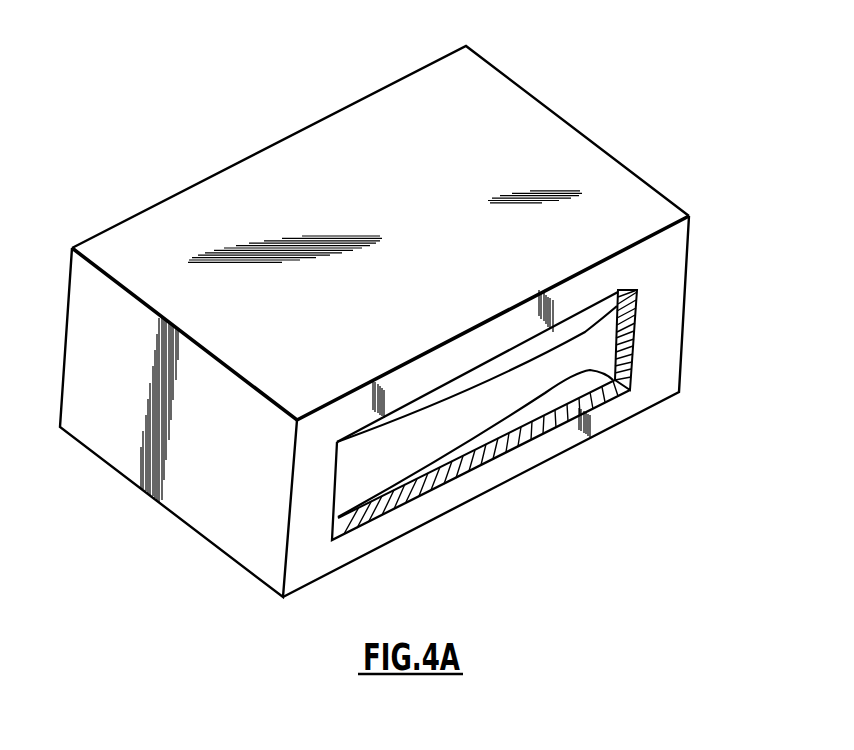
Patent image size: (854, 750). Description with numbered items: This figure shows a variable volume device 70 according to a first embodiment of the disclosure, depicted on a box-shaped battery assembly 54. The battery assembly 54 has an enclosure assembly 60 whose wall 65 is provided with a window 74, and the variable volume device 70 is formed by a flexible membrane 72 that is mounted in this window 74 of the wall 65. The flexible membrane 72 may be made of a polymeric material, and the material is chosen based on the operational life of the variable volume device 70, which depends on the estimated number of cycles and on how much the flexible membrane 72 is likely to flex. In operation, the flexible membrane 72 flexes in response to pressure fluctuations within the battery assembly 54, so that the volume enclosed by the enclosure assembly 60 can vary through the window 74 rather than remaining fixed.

The battery assembly 54 is at (398, 305).
The enclosure assembly 60 is at (615, 173).
The wall 65 is at (655, 387).
The variable volume device 70 is at (612, 342).
The flexible membrane 72 is at (497, 390).
The window 74 is at (375, 515).